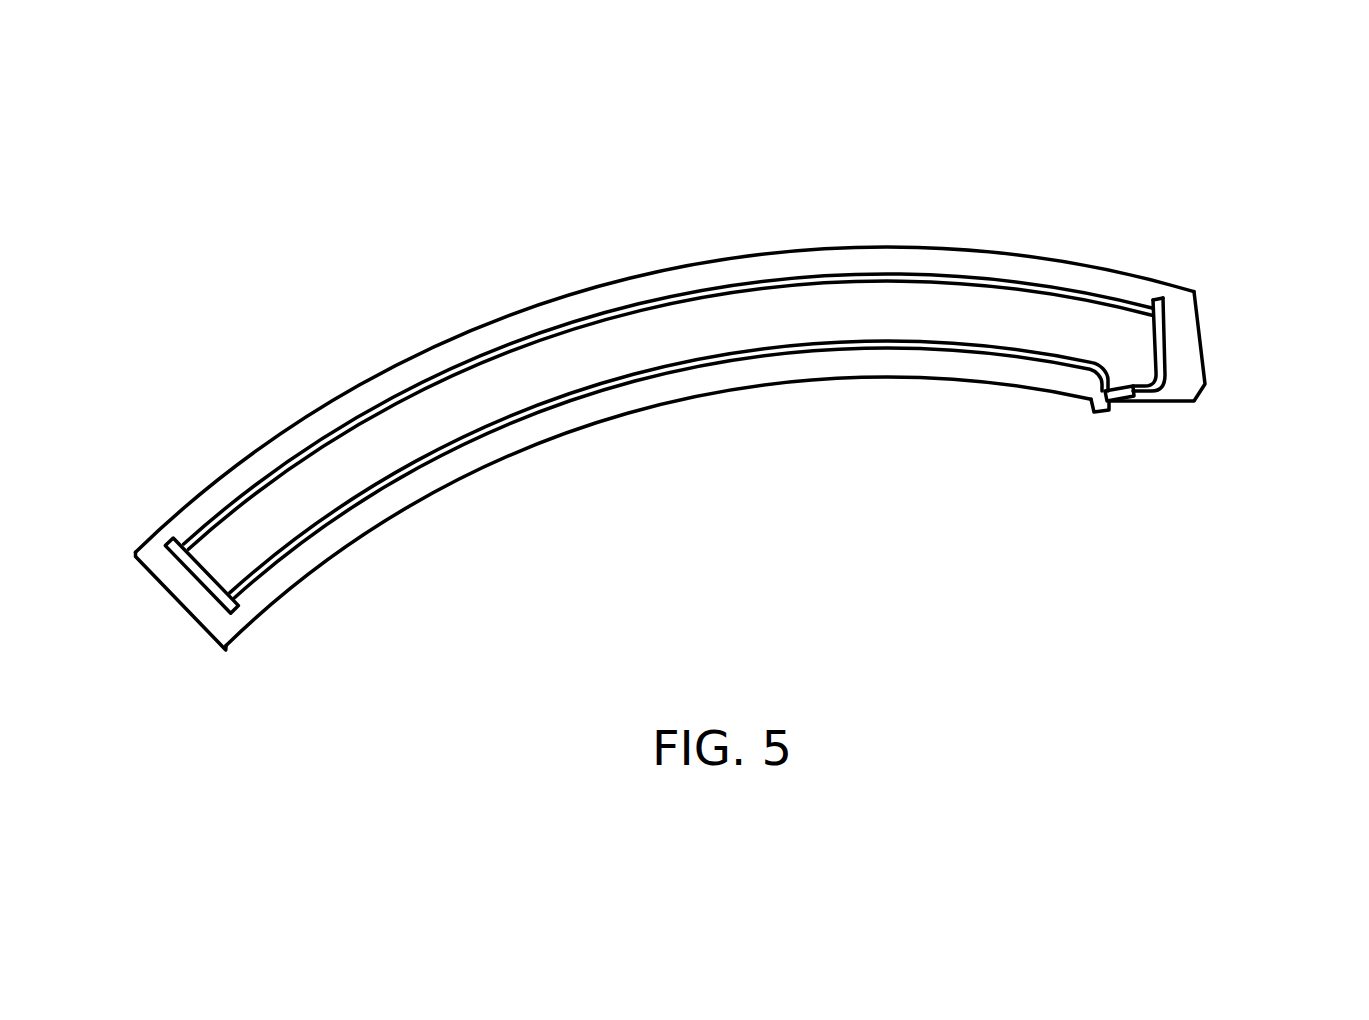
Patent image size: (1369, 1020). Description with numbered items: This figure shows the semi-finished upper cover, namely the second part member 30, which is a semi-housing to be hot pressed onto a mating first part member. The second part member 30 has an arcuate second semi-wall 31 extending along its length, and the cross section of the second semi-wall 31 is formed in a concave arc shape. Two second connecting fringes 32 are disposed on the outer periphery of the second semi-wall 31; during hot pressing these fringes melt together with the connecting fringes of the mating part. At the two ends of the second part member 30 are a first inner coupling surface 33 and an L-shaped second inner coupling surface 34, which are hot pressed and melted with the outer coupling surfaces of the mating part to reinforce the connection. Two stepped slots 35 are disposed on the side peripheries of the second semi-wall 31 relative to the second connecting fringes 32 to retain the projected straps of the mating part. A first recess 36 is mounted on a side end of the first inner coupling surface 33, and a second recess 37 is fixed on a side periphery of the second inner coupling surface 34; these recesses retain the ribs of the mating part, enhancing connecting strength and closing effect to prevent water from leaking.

The second part member 30 is at (605, 218).
The second semi-wall 31 is at (725, 328).
The second connecting fringes 32 is at (510, 324).
The first inner coupling surface 33 is at (188, 597).
The second inner coupling surface 34 is at (1187, 343).
The stepped slots 35 is at (202, 533).
The first recess 36 is at (197, 620).
The second recess 37 is at (1138, 392).